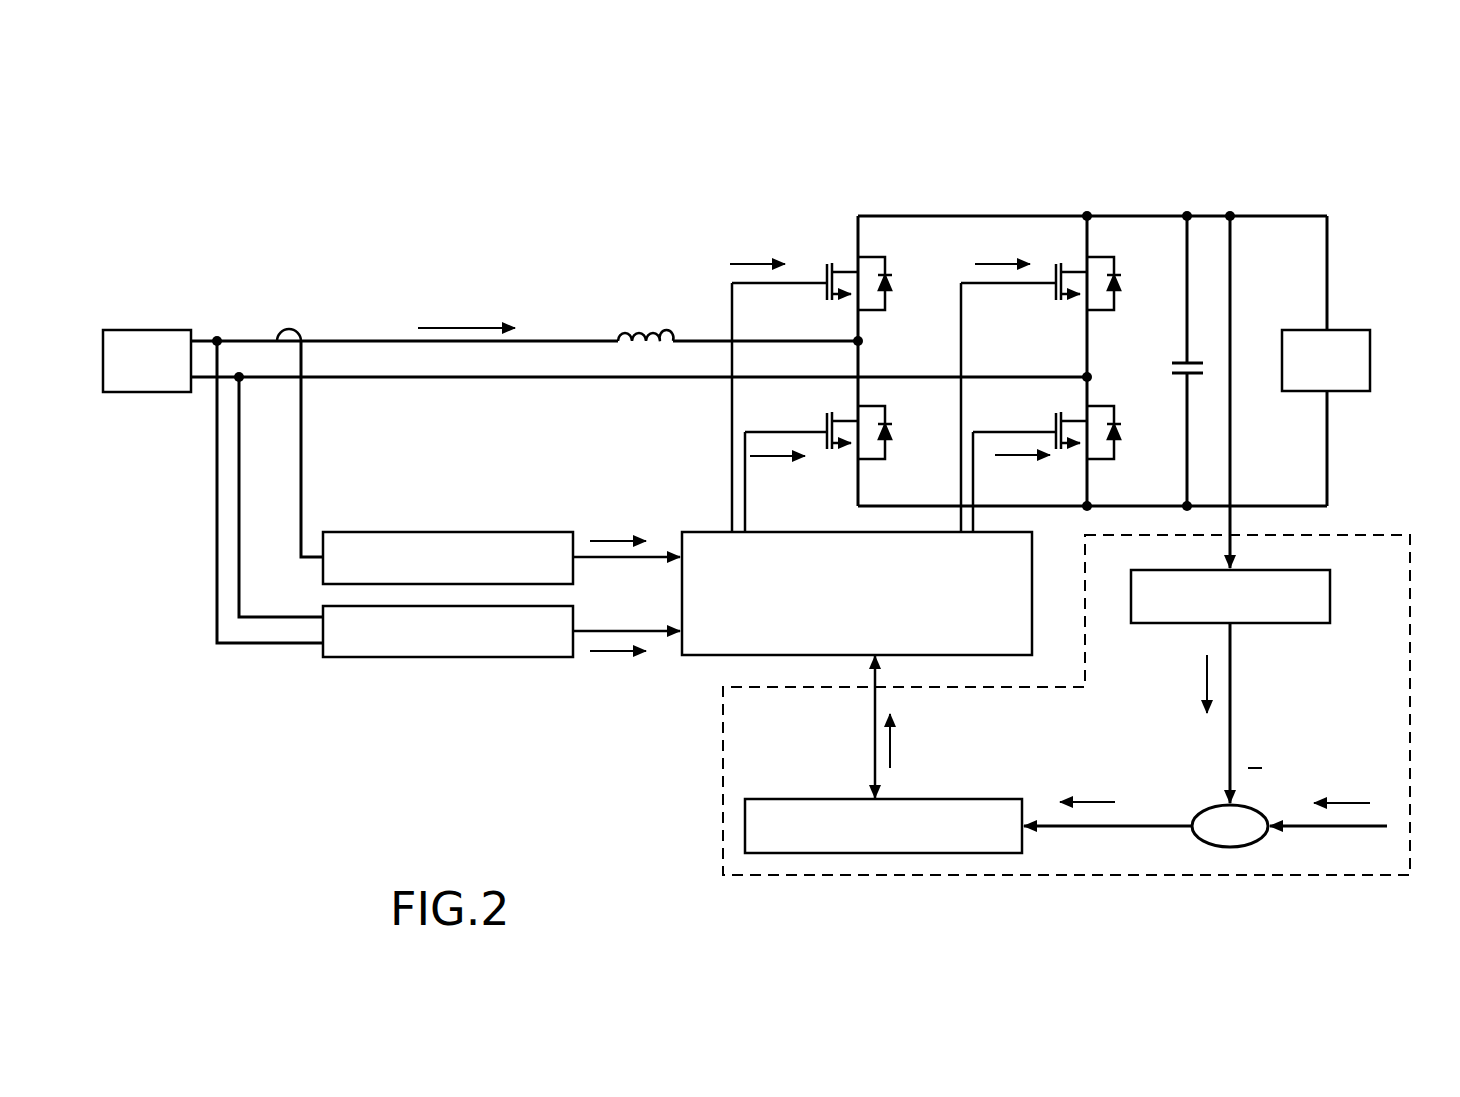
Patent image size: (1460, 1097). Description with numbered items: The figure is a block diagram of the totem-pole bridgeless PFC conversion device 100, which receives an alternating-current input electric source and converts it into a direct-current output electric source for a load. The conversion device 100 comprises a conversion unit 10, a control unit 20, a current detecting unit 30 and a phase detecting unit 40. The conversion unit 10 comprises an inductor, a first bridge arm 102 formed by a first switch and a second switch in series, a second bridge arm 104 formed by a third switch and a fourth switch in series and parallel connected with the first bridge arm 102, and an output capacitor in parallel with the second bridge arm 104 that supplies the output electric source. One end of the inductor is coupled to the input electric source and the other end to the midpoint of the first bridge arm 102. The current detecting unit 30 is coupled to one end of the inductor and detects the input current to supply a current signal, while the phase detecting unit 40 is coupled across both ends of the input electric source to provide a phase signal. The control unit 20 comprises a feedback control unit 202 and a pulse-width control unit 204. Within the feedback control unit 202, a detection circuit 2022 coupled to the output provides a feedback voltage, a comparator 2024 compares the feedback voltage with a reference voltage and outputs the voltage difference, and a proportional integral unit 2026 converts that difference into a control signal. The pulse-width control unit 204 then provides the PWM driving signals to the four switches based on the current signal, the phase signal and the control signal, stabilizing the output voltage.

The conversion unit 10 is at (1330, 162).
The conversion device 100 is at (576, 170).
The first bridge arm 102 is at (838, 208).
The second bridge arm 104 is at (1053, 205).
The control unit 20 is at (618, 760).
The current detecting unit 30 is at (408, 542).
The phase detecting unit 40 is at (428, 651).
The pulse-width control unit 204 is at (712, 652).
The feedback control unit 202 is at (1373, 568).
The detection circuit 2022 is at (1312, 615).
The comparator 2024 is at (1208, 820).
The proportional integral unit 2026 is at (800, 805).